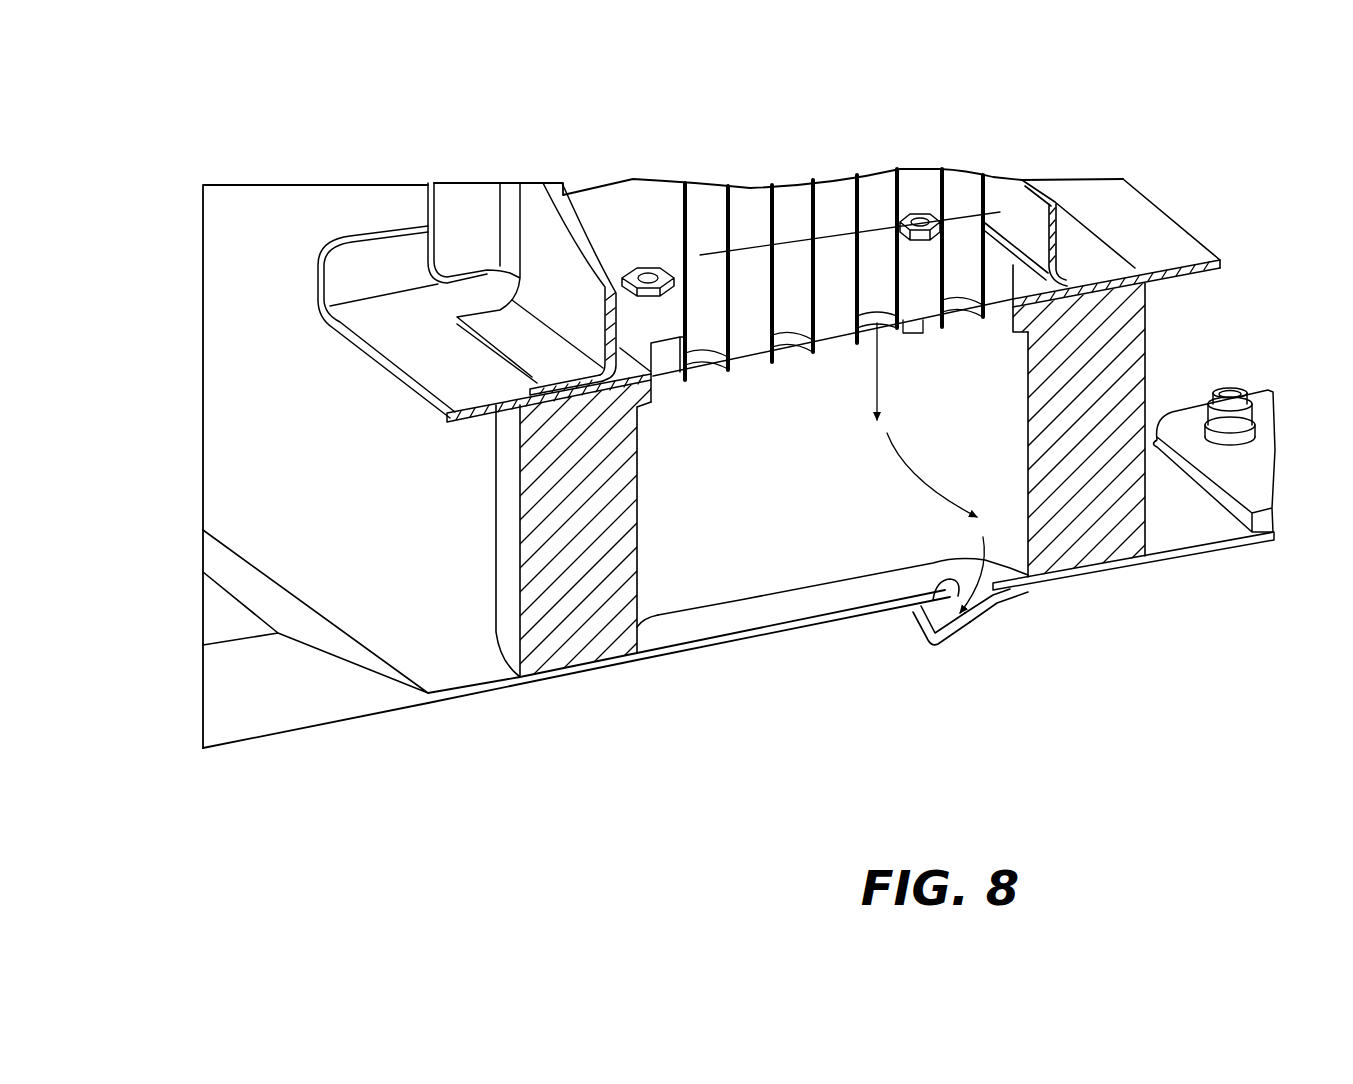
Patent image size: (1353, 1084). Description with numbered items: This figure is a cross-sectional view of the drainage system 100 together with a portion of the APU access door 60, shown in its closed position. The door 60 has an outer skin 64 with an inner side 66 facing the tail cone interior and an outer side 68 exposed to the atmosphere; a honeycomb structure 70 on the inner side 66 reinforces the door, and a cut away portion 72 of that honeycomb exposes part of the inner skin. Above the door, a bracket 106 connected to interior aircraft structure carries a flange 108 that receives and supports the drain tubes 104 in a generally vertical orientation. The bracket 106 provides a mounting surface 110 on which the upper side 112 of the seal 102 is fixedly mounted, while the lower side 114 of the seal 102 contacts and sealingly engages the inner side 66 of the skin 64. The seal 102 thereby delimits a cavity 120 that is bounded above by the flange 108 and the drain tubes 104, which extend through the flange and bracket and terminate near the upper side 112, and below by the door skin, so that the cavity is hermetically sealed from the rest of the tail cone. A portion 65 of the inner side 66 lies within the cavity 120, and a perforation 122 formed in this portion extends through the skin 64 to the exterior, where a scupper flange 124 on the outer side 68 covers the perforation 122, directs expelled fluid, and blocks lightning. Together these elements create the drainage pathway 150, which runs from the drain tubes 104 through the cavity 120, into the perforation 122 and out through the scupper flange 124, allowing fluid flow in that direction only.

The APU access door 60 is at (577, 683).
The outer skin 64 is at (740, 643).
The portion of the inner side of the door skin 65 is at (678, 636).
The inner side 66 is at (353, 586).
The outer side 68 is at (263, 743).
The honeycomb structure 70 is at (222, 617).
The cut away portion 72 is at (258, 450).
The drainage system 100 is at (377, 820).
The seal 102 is at (571, 523).
The drain tubes 104 is at (887, 200).
The bracket 106 is at (1106, 208).
The flange 108 is at (637, 318).
The mounting surface 110 is at (1203, 270).
The upper side 112 is at (533, 442).
The lower side 114 is at (1110, 545).
The cavity 120 is at (763, 464).
The perforation 122 is at (913, 613).
The scupper flange 124 is at (977, 627).
The drainage pathway 150 is at (880, 377).